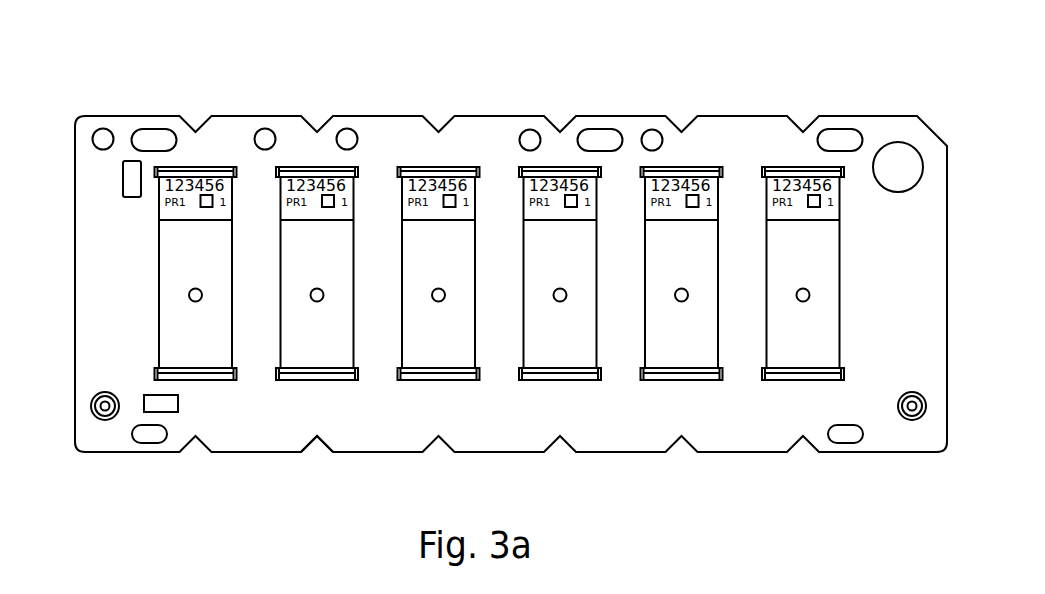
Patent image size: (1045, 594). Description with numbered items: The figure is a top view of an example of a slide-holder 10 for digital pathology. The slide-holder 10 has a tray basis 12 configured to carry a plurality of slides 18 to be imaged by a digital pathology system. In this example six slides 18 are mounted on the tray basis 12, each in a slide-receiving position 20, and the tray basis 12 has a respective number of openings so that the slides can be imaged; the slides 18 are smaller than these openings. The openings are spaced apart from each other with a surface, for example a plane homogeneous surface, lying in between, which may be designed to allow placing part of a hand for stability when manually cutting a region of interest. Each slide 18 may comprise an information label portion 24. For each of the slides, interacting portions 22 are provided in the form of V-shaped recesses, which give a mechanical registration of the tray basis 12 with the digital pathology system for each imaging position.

The slide-holder 10 is at (93, 100).
The tray basis 12 is at (876, 378).
The slide 18 is at (213, 361).
The slide-receiving position 20 is at (134, 272).
The interacting portion 22 is at (322, 455).
The information label portion 24 is at (183, 133).